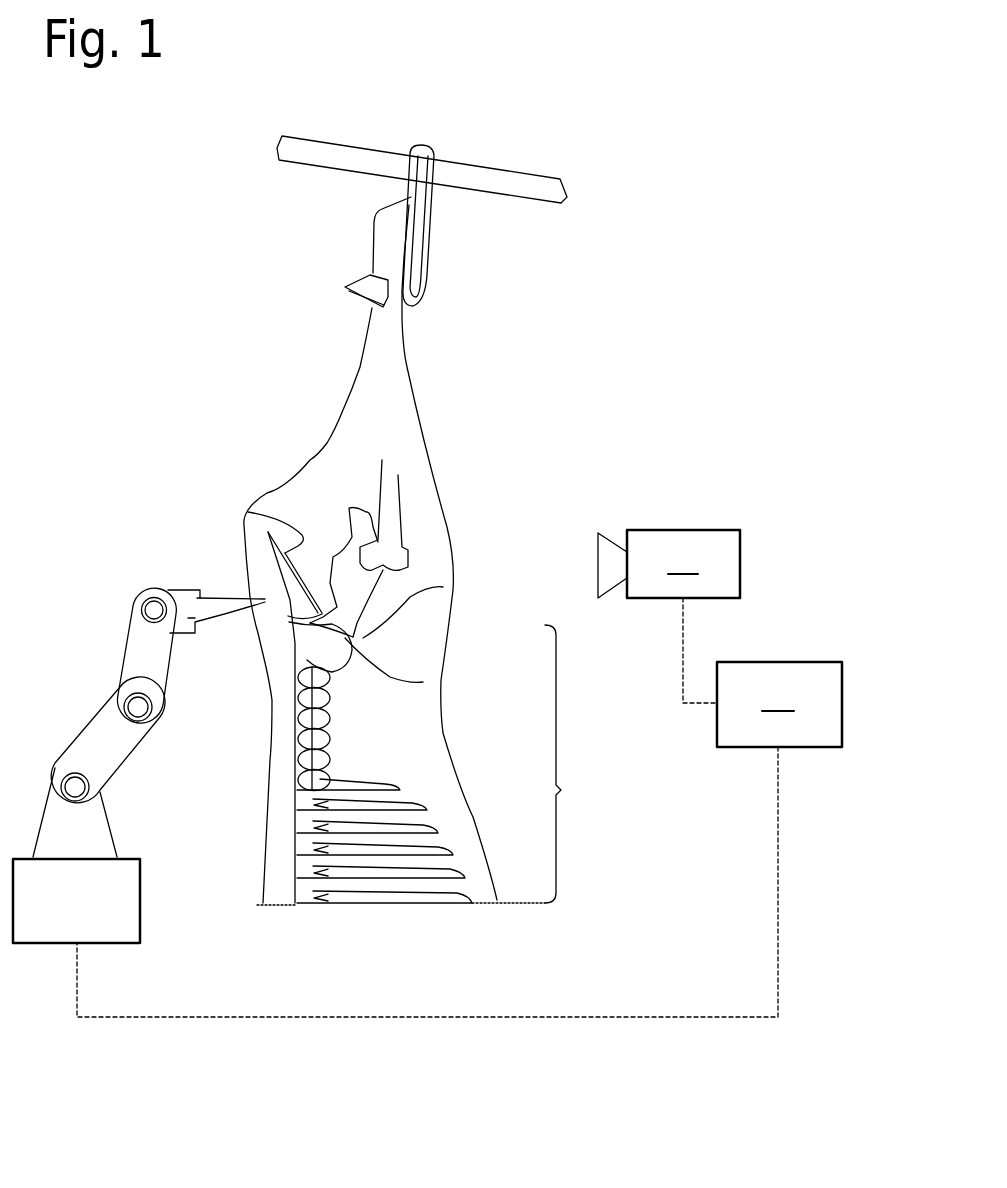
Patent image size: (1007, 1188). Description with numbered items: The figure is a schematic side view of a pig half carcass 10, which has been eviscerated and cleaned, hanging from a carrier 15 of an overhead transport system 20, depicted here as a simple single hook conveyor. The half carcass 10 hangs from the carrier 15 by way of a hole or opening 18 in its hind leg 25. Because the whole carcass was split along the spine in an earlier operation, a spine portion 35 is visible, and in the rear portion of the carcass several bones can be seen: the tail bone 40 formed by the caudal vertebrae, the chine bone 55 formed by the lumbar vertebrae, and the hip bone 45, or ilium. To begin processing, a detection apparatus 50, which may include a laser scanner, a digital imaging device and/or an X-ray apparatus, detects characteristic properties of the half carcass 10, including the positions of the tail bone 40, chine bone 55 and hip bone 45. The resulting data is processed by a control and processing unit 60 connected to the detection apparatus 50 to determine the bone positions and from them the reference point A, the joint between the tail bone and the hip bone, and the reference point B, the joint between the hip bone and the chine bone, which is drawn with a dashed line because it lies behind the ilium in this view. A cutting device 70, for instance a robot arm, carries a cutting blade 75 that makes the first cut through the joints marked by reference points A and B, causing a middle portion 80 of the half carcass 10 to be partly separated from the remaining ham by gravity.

The pig half carcass 10 is at (577, 727).
The carrier 15 is at (429, 235).
The hole or opening 18 is at (370, 275).
The overhead transport system 20 is at (510, 190).
The hind leg 25 is at (380, 345).
The spine portion 35 is at (295, 752).
The tail bone 40 is at (248, 512).
The hip bone 45 is at (443, 587).
The detection apparatus 50 is at (669, 564).
The chine bone 55 is at (295, 661).
The control and processing unit 60 is at (779, 704).
The cutting device 70 is at (88, 722).
The cutting blade 75 is at (203, 606).
The middle portion 80 is at (561, 790).
The reference point A is at (322, 632).
The reference point B is at (423, 682).